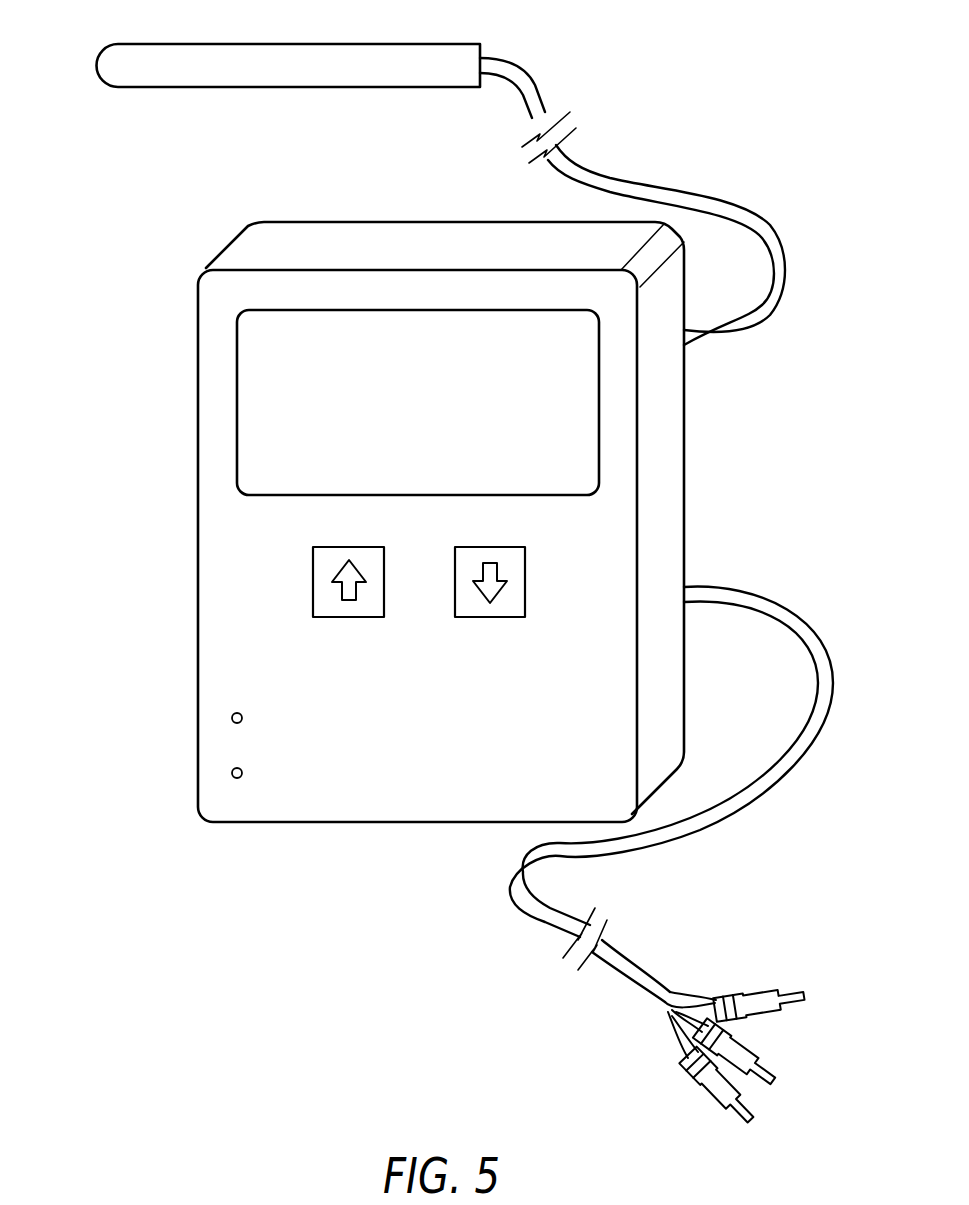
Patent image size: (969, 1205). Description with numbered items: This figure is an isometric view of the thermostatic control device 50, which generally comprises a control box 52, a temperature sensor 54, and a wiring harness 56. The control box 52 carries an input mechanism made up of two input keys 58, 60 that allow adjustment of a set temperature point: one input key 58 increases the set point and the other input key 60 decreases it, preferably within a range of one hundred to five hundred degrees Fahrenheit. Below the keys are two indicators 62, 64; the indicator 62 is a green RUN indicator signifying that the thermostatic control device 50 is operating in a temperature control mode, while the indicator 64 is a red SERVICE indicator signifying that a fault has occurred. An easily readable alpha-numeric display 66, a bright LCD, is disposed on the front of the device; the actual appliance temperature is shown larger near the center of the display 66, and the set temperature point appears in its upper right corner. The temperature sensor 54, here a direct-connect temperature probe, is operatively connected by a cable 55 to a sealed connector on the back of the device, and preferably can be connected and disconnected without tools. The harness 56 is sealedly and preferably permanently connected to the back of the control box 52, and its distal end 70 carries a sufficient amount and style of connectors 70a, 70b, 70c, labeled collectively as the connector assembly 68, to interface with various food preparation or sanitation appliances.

The thermostatic control device 50 is at (128, 443).
The control box 52 is at (660, 470).
The temperature sensor 54 is at (296, 62).
The cable 55 is at (627, 170).
The wiring harness 56 is at (530, 926).
The input key 58 is at (326, 565).
The input key 60 is at (513, 565).
The RUN indicator 62 is at (231, 718).
The SERVICE indicator 64 is at (231, 773).
The alpha-numeric display 66 is at (273, 377).
The connector assembly 68 is at (684, 1093).
The distal end 70 is at (663, 1006).
The connector 70a is at (748, 998).
The connector 70b is at (748, 1060).
The connector 70c is at (720, 1105).